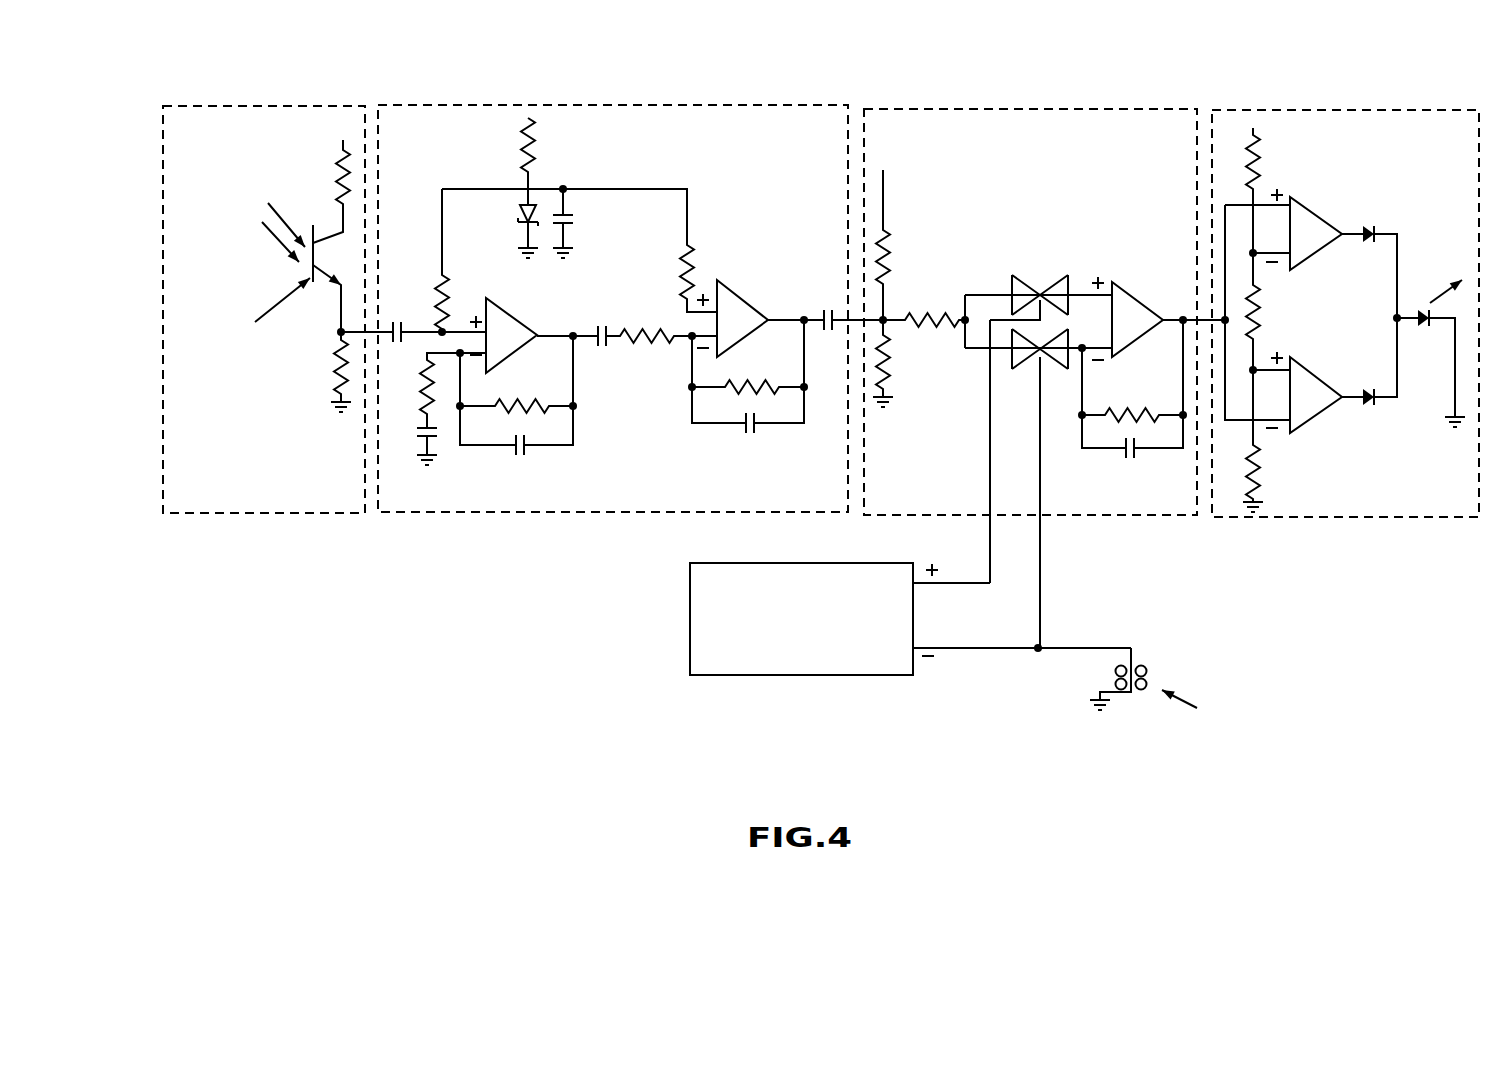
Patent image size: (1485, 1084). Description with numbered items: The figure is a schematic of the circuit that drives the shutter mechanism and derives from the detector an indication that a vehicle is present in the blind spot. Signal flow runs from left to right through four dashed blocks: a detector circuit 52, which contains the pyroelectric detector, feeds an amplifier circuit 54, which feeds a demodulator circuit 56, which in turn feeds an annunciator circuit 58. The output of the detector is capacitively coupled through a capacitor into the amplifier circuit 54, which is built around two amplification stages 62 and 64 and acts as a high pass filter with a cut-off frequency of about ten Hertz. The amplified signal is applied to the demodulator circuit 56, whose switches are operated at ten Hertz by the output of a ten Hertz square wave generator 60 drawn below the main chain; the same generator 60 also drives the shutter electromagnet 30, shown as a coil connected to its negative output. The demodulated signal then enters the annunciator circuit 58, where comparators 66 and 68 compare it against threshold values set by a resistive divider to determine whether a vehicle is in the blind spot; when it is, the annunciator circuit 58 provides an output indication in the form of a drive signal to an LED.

The detector circuit 52 is at (298, 104).
The amplifier circuit 54 is at (628, 105).
The demodulator circuit 56 is at (1033, 108).
The annunciator circuit 58 is at (1283, 110).
The 10 Hertz square wave generator 60 is at (728, 668).
The amplification stage 62 is at (500, 340).
The amplification stage 64 is at (748, 322).
The comparator 66 is at (1316, 240).
The comparator 68 is at (1306, 374).
The shutter electromagnet 30 is at (1120, 705).